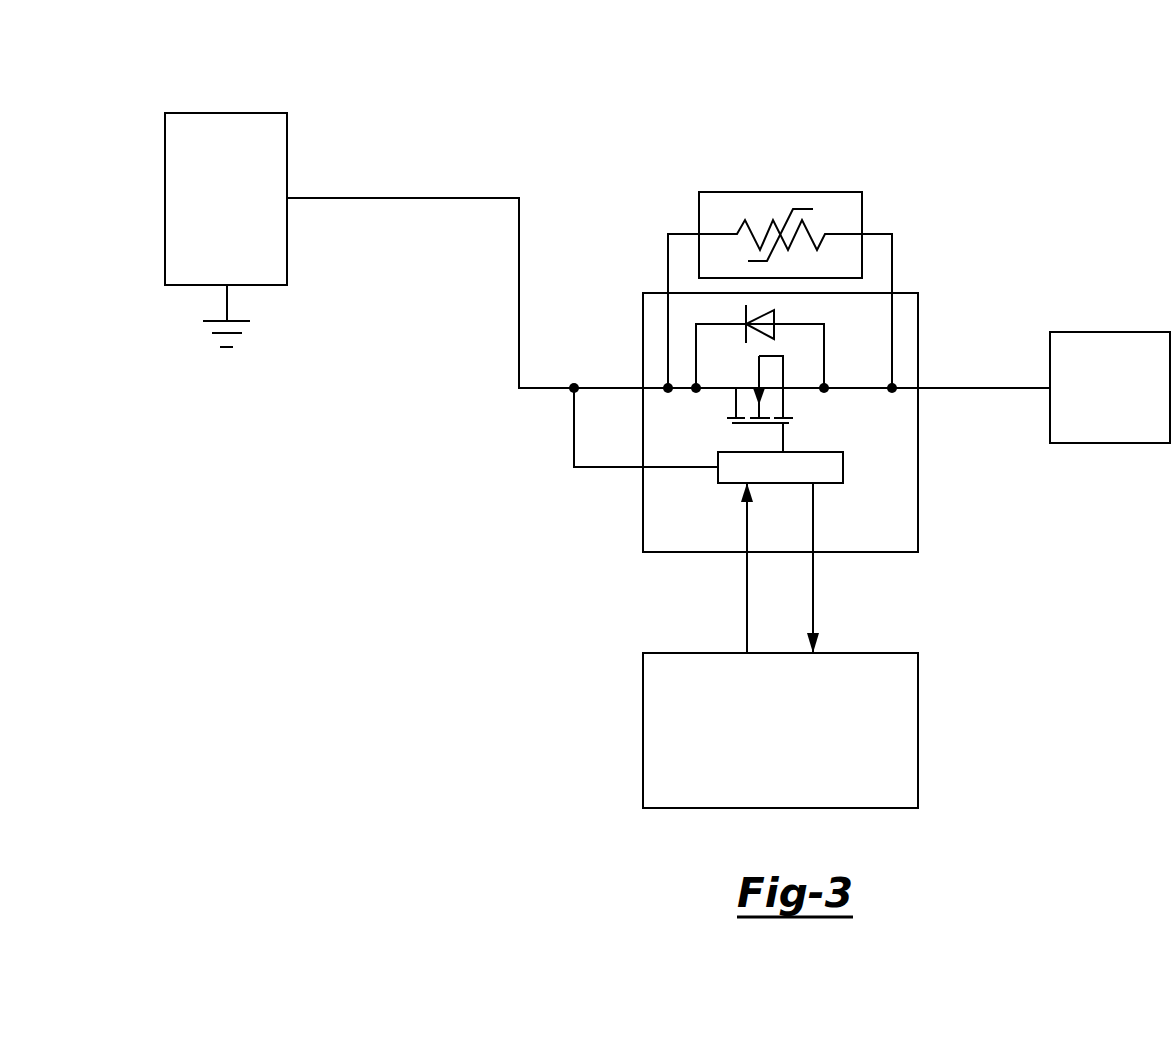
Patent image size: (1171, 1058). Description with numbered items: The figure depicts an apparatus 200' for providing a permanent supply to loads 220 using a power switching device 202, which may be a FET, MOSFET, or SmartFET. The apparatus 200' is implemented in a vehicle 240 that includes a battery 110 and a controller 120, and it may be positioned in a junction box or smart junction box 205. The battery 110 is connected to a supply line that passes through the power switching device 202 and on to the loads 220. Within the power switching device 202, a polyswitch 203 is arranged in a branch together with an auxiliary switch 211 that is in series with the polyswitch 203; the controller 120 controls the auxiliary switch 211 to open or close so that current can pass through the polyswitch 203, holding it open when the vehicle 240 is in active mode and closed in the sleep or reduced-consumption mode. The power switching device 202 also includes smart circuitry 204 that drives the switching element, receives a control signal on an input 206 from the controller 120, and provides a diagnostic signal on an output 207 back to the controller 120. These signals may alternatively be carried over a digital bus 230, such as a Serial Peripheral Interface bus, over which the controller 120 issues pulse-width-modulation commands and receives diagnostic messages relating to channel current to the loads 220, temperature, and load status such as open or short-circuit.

The battery 110 is at (227, 113).
The vehicle 240 is at (433, 90).
The junction box 205 is at (600, 90).
The apparatus 200' is at (994, 98).
The power switching device 202 is at (863, 327).
The polyswitch 203 is at (780, 192).
The auxiliary switch 211 is at (838, 223).
The smart circuitry 204 is at (813, 452).
The input 206 is at (745, 552).
The output 207 is at (815, 552).
The digital bus 230 is at (845, 605).
The controller 120 is at (918, 731).
The loads 220 is at (1111, 332).